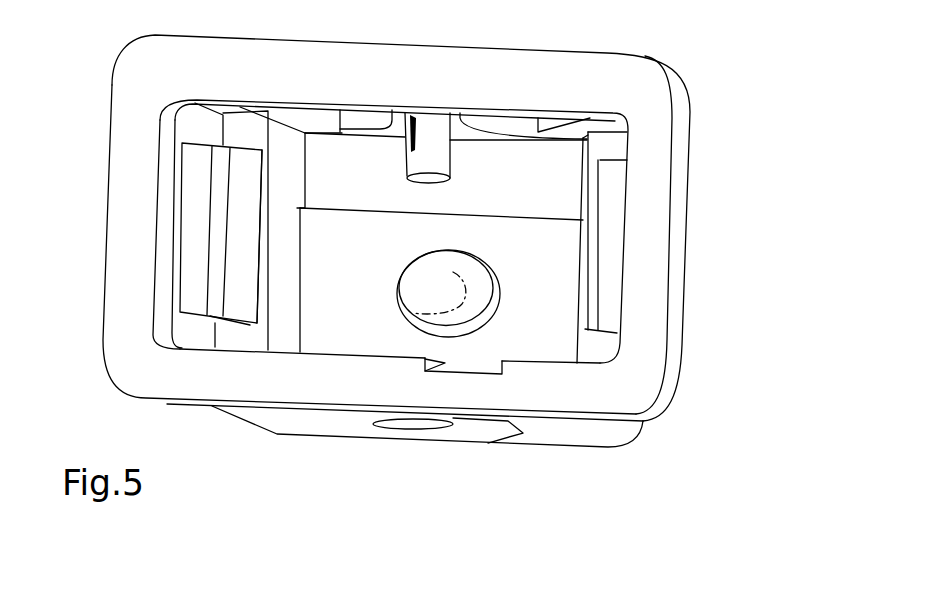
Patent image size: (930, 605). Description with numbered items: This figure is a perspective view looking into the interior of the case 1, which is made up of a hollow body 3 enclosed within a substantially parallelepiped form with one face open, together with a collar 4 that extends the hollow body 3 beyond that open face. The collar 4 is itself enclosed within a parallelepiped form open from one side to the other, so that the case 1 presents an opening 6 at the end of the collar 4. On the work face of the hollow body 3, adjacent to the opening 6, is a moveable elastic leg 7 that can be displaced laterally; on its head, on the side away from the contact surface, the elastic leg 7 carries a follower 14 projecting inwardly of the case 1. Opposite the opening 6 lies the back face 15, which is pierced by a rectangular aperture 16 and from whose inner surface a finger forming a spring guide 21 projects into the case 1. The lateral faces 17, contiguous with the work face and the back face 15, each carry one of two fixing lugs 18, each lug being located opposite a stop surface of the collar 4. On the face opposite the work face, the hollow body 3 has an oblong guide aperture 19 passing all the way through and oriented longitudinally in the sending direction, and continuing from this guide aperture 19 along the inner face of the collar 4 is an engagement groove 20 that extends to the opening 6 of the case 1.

The case 1 is at (720, 91).
The hollow body 3 is at (610, 455).
The collar 4 is at (317, 58).
The opening 6 is at (546, 348).
The elastic leg 7 is at (470, 145).
The follower 14 is at (416, 162).
The back face 15 is at (355, 291).
The rectangular aperture 16 is at (517, 157).
The lateral faces 17 is at (238, 130).
The fixing lugs 18 is at (195, 203).
The guide aperture 19 is at (483, 430).
The engagement groove 20 is at (457, 353).
The spring guide 21 is at (453, 272).